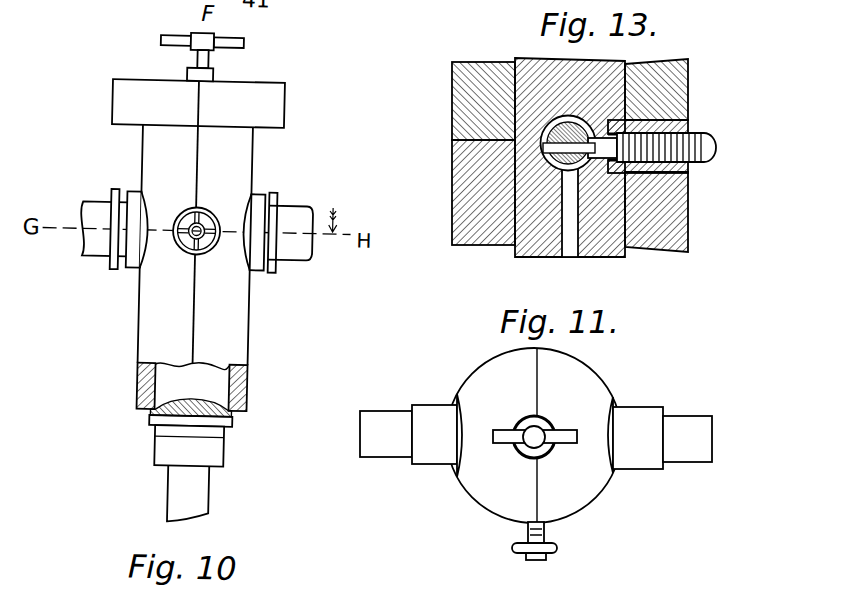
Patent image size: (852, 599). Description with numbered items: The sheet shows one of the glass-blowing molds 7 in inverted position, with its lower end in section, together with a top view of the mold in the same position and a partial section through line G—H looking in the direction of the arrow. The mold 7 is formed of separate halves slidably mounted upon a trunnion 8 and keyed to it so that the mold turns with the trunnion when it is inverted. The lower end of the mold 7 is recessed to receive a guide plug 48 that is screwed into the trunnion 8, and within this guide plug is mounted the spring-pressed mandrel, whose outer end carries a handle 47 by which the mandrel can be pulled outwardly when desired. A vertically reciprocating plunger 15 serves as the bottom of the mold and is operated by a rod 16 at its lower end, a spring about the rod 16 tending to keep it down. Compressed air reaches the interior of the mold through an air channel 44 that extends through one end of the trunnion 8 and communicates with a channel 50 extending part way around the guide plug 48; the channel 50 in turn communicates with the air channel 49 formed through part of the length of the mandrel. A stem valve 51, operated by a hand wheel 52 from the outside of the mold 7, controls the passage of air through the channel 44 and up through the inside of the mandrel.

In FIG. 10, the mold 7 is at (195, 245).
In FIG. 13, the mold 7 is at (474, 153).
In FIG. 11, the mold 7 is at (593, 368).
In FIG. 10, the trunnion 8 is at (303, 223).
In FIG. 13, the trunnion 8 is at (605, 245).
In FIG. 11, the trunnion 8 is at (422, 422).
In FIG. 10, the plunger 15 is at (215, 392).
In FIG. 10, the rod 16 is at (192, 492).
In FIG. 13, the air channel 44 is at (564, 242).
In FIG. 10, the handle 47 is at (233, 41).
In FIG. 11, the handle 47 is at (568, 430).
In FIG. 13, the guide plug 48 is at (558, 117).
In FIG. 11, the guide plug 48 is at (567, 399).
In FIG. 13, the air channel 49 is at (582, 118).
In FIG. 13, the channel 50 is at (558, 172).
In FIG. 13, the stem valve 51 is at (701, 147).
In FIG. 10, the hand wheel 52 is at (201, 255).
In FIG. 11, the hand wheel 52 is at (557, 548).